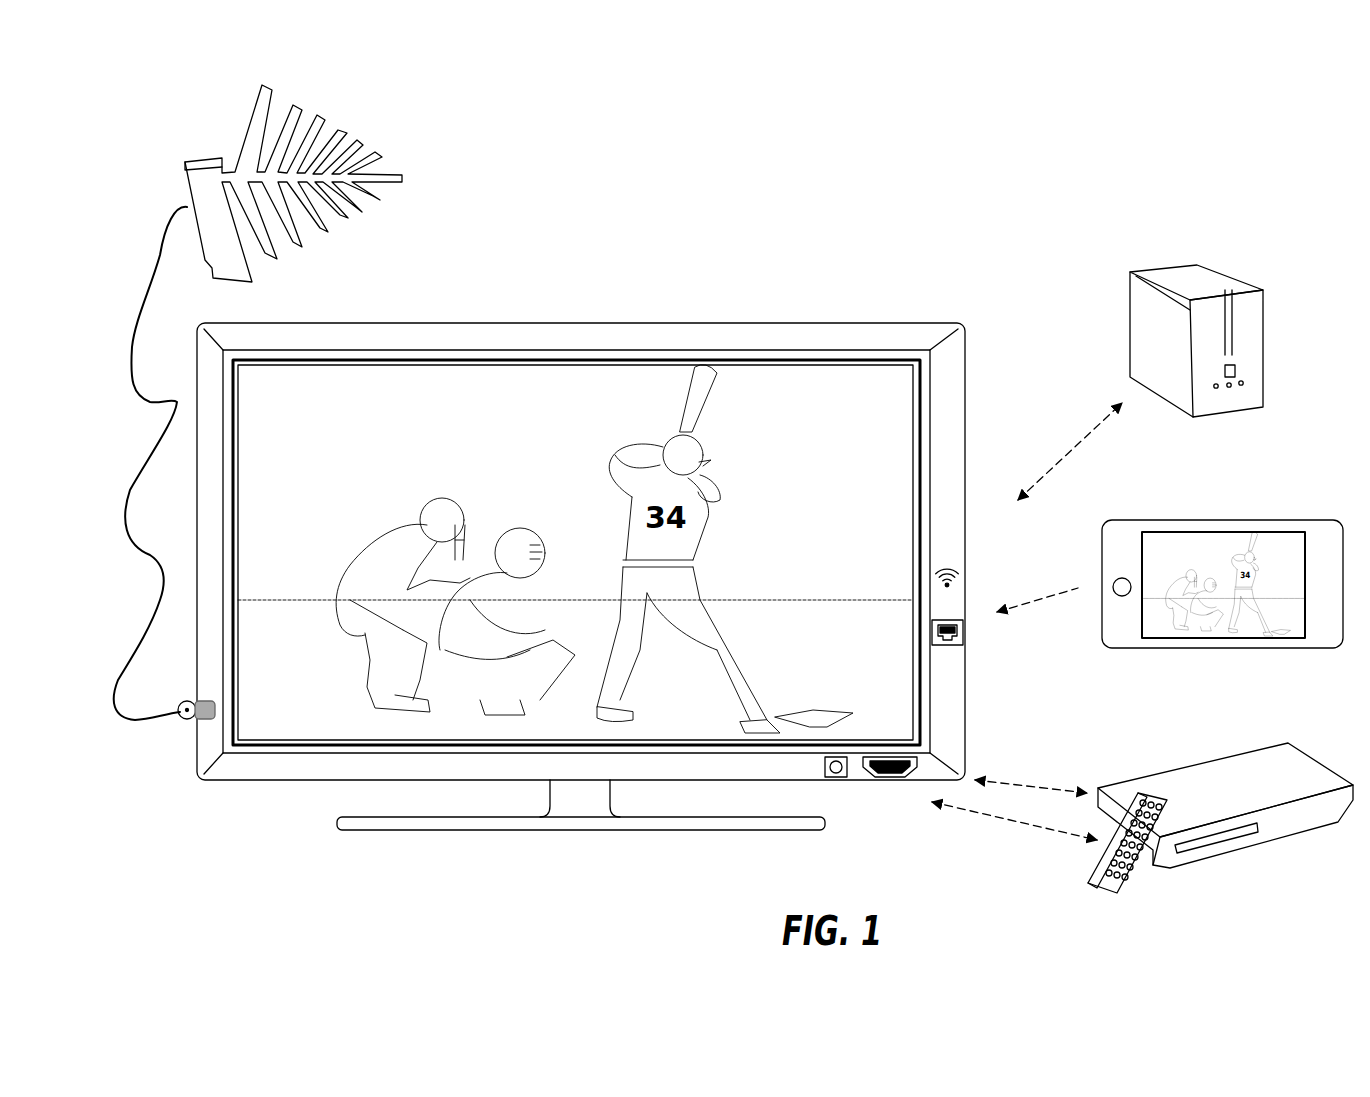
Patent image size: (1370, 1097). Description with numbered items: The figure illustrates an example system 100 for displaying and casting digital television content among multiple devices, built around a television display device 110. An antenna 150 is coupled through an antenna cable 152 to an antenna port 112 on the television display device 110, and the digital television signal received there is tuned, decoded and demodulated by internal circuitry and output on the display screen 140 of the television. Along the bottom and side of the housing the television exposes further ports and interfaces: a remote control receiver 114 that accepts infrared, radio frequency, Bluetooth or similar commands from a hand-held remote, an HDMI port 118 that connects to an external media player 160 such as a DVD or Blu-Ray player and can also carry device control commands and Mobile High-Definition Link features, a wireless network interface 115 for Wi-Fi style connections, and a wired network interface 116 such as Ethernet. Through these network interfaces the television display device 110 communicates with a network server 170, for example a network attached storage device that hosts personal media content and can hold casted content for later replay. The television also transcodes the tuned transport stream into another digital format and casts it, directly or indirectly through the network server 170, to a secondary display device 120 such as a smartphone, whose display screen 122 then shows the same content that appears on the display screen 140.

The system 100 is at (1200, 107).
The television display device 110 is at (925, 322).
The antenna port 112 is at (188, 722).
The remote control receiver 114 is at (826, 778).
The wireless network interface 115 is at (957, 566).
The wired network interface 116 is at (957, 648).
The HDMI port 118 is at (905, 778).
The secondary display device 120 is at (1222, 584).
The display screen 122 is at (1225, 633).
The display screen 140 is at (790, 357).
The antenna 150 is at (375, 116).
The antenna cable 152 is at (160, 240).
The media player 160 is at (1252, 745).
The network server 170 is at (1240, 276).